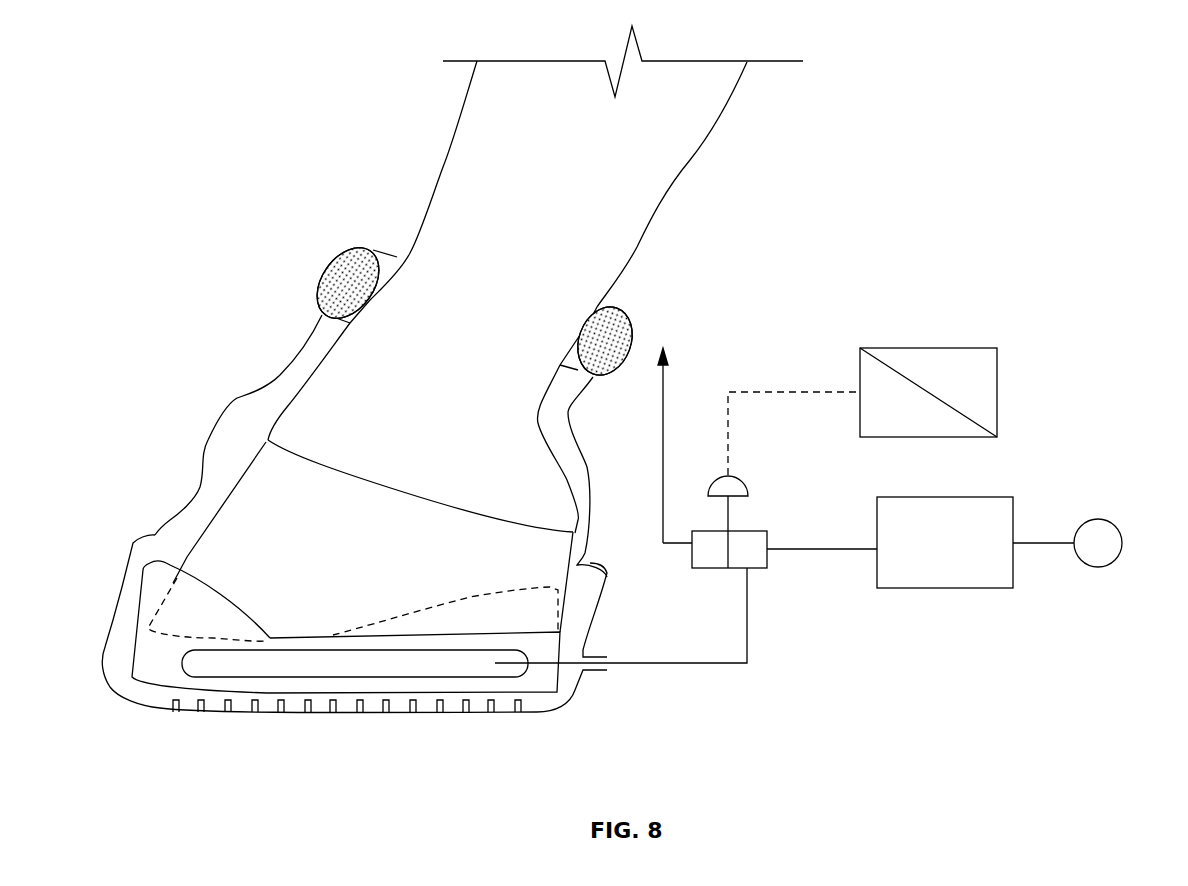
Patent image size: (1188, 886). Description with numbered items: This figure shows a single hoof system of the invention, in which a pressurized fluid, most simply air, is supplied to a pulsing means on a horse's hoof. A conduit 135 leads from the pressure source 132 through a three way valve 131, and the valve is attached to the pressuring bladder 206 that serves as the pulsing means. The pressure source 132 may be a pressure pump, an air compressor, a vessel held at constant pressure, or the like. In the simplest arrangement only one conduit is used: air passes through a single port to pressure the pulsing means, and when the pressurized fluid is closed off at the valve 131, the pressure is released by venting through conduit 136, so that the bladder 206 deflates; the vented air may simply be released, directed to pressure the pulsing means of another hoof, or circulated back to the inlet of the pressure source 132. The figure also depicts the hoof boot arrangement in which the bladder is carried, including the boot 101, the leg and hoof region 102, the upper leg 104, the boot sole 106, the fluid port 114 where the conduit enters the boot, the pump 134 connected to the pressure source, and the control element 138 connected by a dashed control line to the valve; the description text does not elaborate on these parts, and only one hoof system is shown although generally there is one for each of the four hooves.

The hoof boot 101 is at (145, 650).
The pastern 102 is at (230, 407).
The leg 104 is at (443, 165).
The tread 106 is at (217, 713).
The fluid port 114 is at (598, 672).
The three way valve 131 is at (770, 560).
The pressure source 132 is at (995, 497).
The pump 134 is at (1100, 520).
The conduit 135 is at (795, 549).
The conduit 136 is at (665, 378).
The controller 138 is at (975, 350).
The pressuring bladder 206 is at (353, 662).